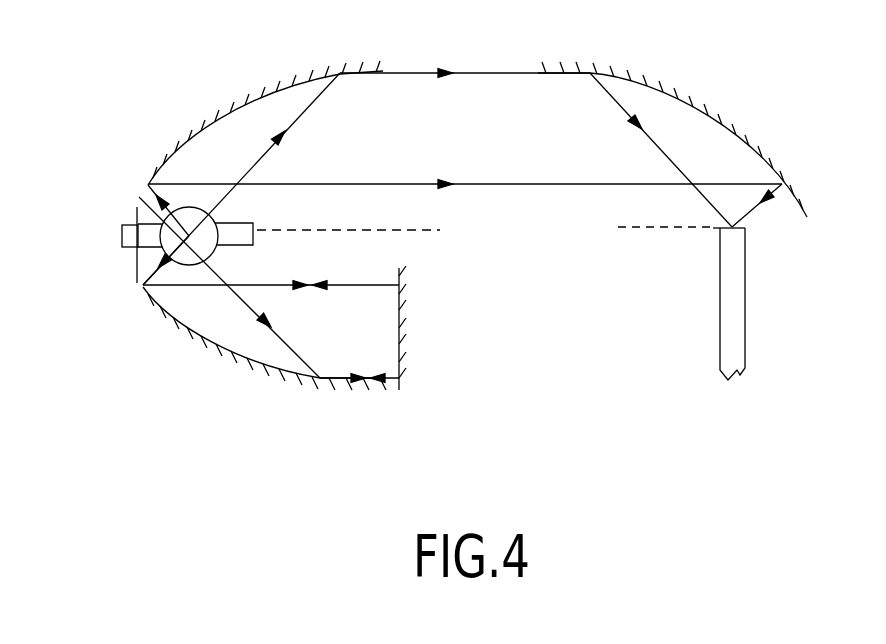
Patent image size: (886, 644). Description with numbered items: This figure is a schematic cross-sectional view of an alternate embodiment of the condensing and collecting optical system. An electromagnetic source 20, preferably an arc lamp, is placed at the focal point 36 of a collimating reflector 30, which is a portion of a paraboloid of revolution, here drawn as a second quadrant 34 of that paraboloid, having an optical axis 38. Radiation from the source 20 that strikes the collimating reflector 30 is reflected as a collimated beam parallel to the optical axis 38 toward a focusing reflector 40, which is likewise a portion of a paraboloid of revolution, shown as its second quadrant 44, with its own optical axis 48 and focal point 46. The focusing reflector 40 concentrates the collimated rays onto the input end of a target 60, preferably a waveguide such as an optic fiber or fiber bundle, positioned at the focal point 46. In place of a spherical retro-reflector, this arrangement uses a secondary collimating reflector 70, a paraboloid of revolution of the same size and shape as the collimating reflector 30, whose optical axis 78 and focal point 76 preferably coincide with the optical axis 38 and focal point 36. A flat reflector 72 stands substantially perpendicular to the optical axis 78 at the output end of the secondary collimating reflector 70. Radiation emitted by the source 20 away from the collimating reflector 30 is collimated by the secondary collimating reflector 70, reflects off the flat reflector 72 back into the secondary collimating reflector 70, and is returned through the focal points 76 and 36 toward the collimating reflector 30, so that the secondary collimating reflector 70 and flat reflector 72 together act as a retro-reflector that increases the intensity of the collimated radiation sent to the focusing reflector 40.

The electromagnetic source 20 is at (110, 247).
The collimating reflector 30 is at (254, 106).
The second quadrant 34 is at (263, 100).
The focal point 36 is at (138, 212).
The optical axis 38 is at (338, 231).
The focusing reflector 40 is at (657, 93).
The second quadrant 44 is at (683, 100).
The focal point 46 is at (745, 229).
The optical axis 48 is at (642, 232).
The target 60 is at (758, 310).
The secondary collimating reflector 70 is at (281, 368).
The flat reflector 72 is at (399, 345).
The focal point 76 is at (137, 262).
The optical axis 78 is at (330, 231).